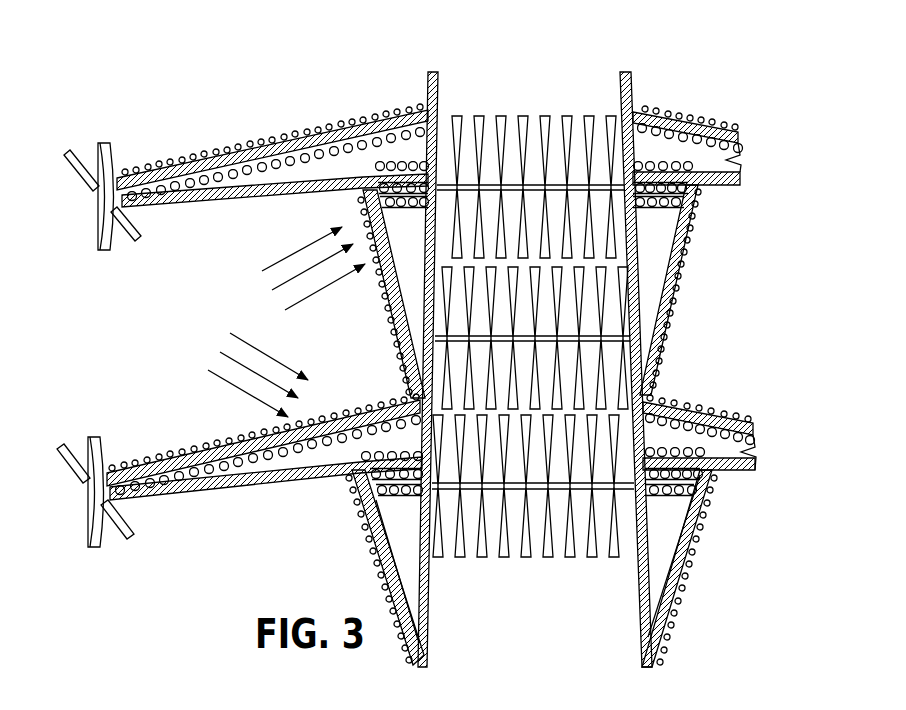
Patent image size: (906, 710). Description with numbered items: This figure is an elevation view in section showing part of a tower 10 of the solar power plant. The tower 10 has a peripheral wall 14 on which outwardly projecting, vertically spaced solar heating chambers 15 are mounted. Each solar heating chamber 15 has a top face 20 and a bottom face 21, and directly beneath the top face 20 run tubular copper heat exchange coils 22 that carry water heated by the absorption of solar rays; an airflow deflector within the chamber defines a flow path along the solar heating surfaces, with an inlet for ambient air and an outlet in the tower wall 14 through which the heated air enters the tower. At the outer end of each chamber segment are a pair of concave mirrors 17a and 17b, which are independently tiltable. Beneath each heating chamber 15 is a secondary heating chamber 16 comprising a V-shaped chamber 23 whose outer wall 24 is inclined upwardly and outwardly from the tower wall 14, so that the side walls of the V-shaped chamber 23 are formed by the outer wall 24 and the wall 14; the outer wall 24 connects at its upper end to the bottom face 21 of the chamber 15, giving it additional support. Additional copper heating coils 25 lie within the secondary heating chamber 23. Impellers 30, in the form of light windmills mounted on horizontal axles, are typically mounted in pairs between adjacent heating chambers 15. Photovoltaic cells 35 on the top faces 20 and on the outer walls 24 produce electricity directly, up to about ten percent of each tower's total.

The tower 10 is at (667, 92).
The peripheral wall 14 is at (637, 233).
The solar heating chamber 15 is at (230, 142).
The secondary heating chamber 16 is at (692, 283).
The concave mirror 17a is at (112, 140).
The concave mirror 17b is at (138, 242).
The top face 20 is at (213, 442).
The bottom face 21 is at (273, 483).
The tubular copper heat exchange coils 22 is at (298, 132).
The V-shaped chamber 23 is at (665, 546).
The outer wall 24 is at (676, 608).
The copper heating coils 25 is at (707, 500).
The impeller 30 is at (634, 320).
The photovoltaic cells 35 is at (388, 114).